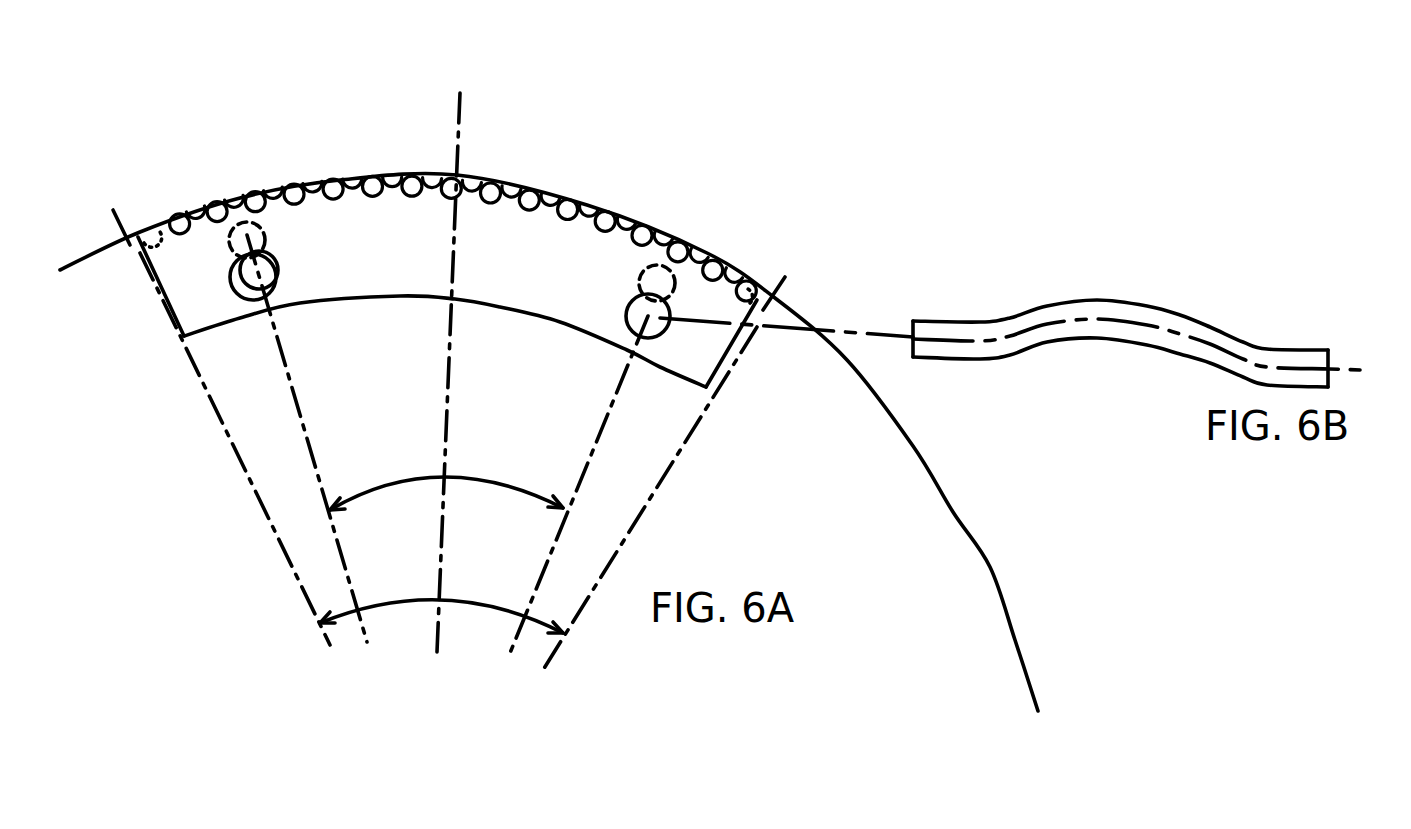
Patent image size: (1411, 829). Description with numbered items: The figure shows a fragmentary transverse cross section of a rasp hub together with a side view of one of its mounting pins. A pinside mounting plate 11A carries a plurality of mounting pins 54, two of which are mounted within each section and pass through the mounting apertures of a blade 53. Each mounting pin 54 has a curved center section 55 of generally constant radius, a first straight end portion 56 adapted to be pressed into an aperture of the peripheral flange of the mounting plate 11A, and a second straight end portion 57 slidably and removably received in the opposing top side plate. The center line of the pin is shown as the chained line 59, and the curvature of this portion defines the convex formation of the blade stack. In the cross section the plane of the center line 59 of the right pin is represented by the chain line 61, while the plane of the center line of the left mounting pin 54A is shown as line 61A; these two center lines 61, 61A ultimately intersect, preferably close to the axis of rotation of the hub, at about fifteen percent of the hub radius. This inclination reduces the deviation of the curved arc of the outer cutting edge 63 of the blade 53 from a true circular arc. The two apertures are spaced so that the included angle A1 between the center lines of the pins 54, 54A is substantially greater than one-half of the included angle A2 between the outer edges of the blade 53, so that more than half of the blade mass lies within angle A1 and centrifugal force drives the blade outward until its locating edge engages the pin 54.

In FIG. 6A, the mounting plate 11A is at (923, 603).
In FIG. 6A, the blade 53 is at (575, 282).
In FIG. 6A, the mounting pin 54 is at (636, 310).
In FIG. 6B, the mounting pin 54 is at (1117, 297).
In FIG. 6A, the mounting pin 54A is at (255, 285).
In FIG. 6B, the curved center section 55 is at (1172, 317).
In FIG. 6B, the first straight end portion 56 is at (1292, 347).
In FIG. 6B, the second straight end portion 57 is at (948, 322).
In FIG. 6B, the chained line 59 is at (1100, 323).
In FIG. 6A, the chain line 61 is at (604, 410).
In FIG. 6A, the center line plane 61A is at (465, 122).
In FIG. 6A, the cutting edge 63 is at (708, 252).
In FIG. 6A, the included angle A1 is at (446, 493).
In FIG. 6A, the included angle A2 is at (441, 612).